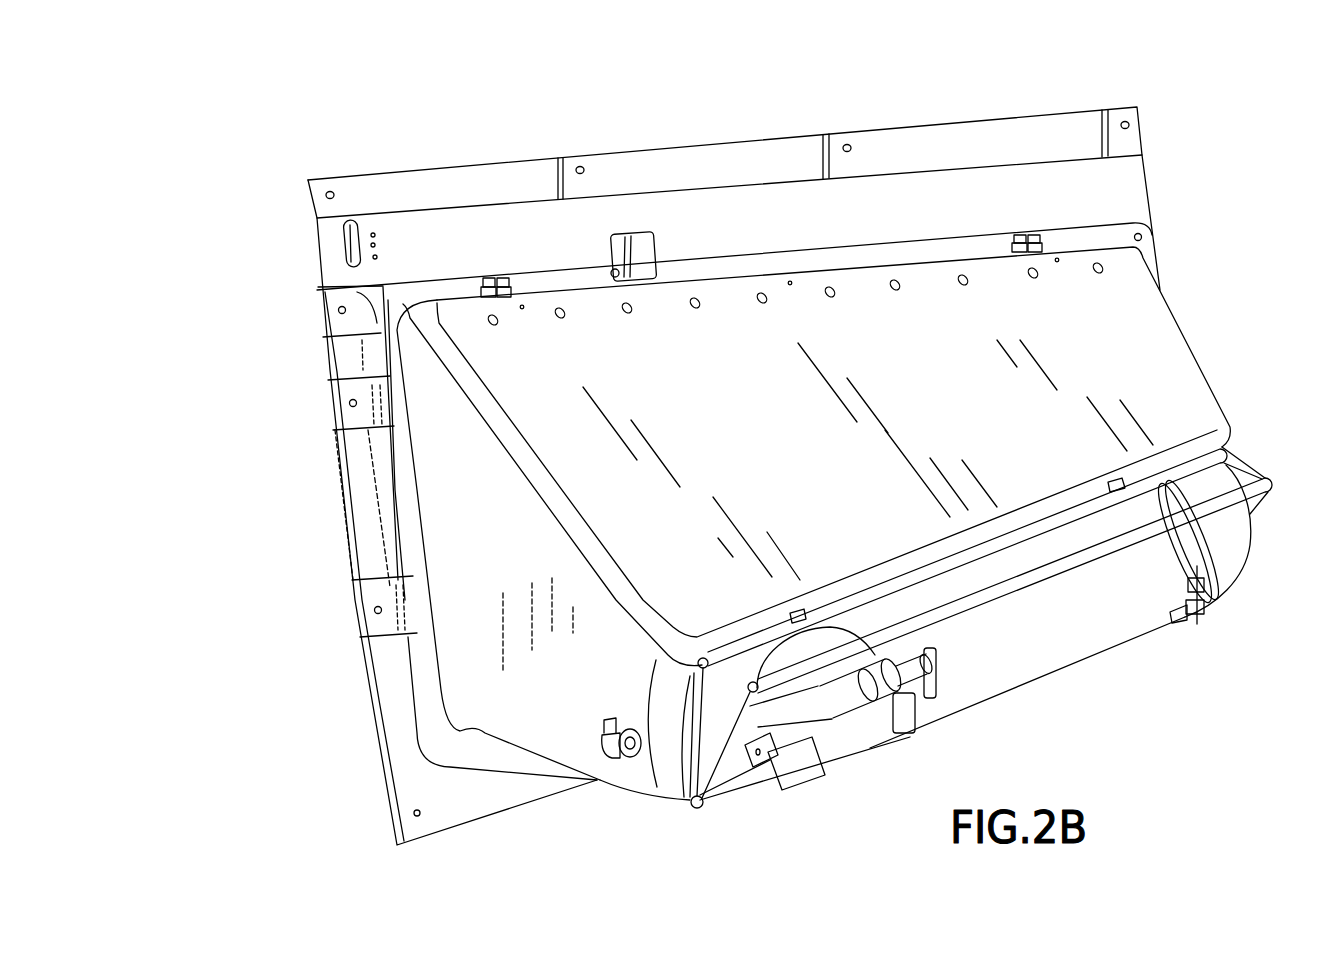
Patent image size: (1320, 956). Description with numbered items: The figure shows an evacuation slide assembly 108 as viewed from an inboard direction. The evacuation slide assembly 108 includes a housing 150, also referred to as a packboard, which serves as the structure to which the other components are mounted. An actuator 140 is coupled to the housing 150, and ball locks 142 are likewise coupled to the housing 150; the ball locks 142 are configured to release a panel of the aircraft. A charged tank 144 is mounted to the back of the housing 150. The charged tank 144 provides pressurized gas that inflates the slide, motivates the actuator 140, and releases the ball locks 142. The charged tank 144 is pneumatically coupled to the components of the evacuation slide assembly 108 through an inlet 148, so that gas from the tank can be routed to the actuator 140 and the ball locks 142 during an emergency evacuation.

The evacuation slide assembly 108 is at (272, 165).
The actuator 140 is at (646, 247).
The ball locks 142 is at (1010, 247).
The charged tank 144 is at (1227, 560).
The inlet 148 is at (617, 750).
The housing 150 is at (1153, 363).